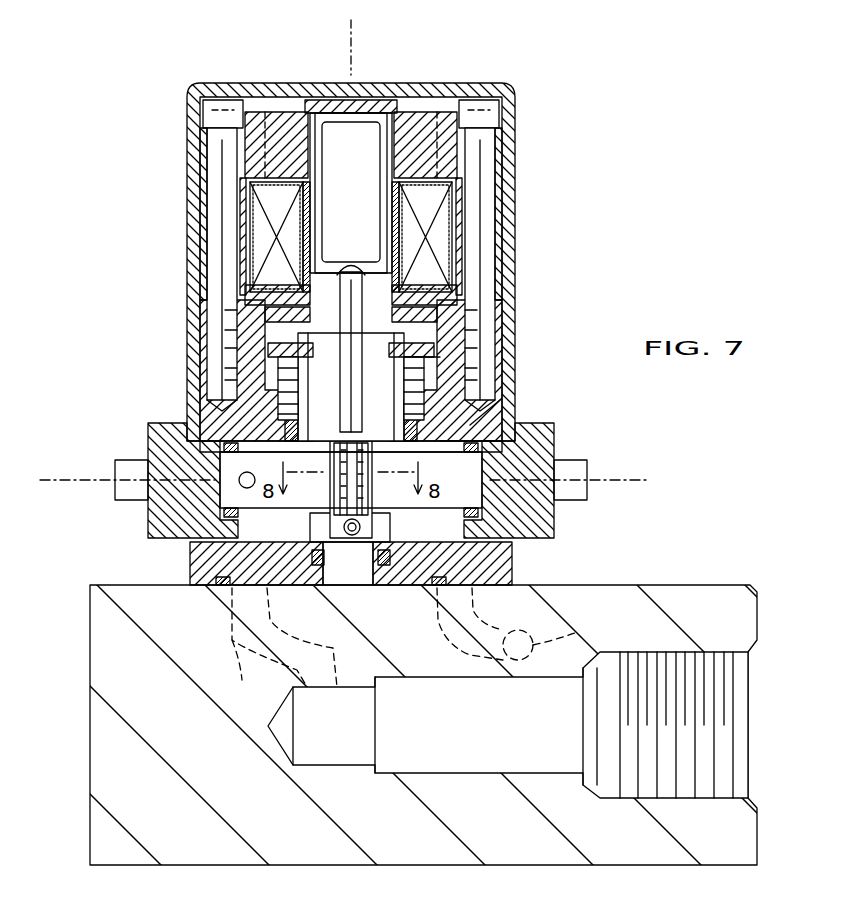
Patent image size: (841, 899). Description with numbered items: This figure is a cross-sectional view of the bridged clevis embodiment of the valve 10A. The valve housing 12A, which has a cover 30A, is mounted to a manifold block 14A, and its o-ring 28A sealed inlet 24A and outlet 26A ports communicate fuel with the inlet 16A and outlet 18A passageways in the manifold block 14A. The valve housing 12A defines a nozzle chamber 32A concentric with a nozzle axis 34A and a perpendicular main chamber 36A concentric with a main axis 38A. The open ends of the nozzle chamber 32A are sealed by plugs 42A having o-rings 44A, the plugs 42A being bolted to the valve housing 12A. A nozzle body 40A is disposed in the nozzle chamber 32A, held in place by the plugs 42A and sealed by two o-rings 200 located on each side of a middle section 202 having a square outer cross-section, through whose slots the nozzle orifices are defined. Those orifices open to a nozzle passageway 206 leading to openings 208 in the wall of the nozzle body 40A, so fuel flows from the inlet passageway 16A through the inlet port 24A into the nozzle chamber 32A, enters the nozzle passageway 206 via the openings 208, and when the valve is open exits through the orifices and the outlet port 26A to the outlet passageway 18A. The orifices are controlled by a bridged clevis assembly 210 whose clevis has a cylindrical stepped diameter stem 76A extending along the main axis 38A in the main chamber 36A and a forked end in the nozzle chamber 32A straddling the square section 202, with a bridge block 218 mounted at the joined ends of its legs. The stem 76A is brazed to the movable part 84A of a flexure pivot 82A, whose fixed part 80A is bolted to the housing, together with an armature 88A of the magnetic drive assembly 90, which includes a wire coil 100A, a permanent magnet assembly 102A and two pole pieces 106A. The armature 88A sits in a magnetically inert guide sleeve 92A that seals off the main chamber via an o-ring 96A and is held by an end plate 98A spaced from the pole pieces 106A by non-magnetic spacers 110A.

The valve 10A is at (549, 96).
The valve housing 12A is at (500, 567).
The manifold block 14A is at (715, 585).
The inlet passageway 16A is at (487, 725).
The outlet passageway 18A is at (578, 637).
The inlet port 24A is at (240, 608).
The outlet port 26A is at (458, 588).
The o-ring 28A is at (222, 590).
The cover 30A is at (512, 206).
The nozzle chamber 32A is at (190, 559).
The nozzle axis 34A is at (630, 480).
The main chamber 36A is at (290, 397).
The main axis 38A is at (350, 48).
The nozzle body 40A is at (500, 433).
The plug 42A is at (160, 519).
The o-ring 44A is at (200, 453).
The stem 76A is at (357, 262).
The fixed part 80A is at (280, 364).
The flexure pivot 82A is at (445, 341).
The movable part 84A is at (272, 344).
The armature 88A is at (369, 157).
The magnetic drive assembly 90 is at (295, 98).
The guide sleeve 92A is at (363, 110).
The o-ring 96A is at (498, 308).
The end plate 98A is at (212, 303).
The wire coil 100A is at (440, 219).
The permanent magnet assembly 102A is at (426, 110).
The pole piece 106A is at (250, 162).
The non-magnetic spacer 110A is at (208, 270).
The o-ring 200 is at (287, 418).
The middle section 202 is at (497, 426).
The nozzle passageway 206 is at (453, 480).
The opening 208 is at (238, 482).
The bridged clevis assembly 210 is at (428, 359).
The bridge block 218 is at (348, 545).